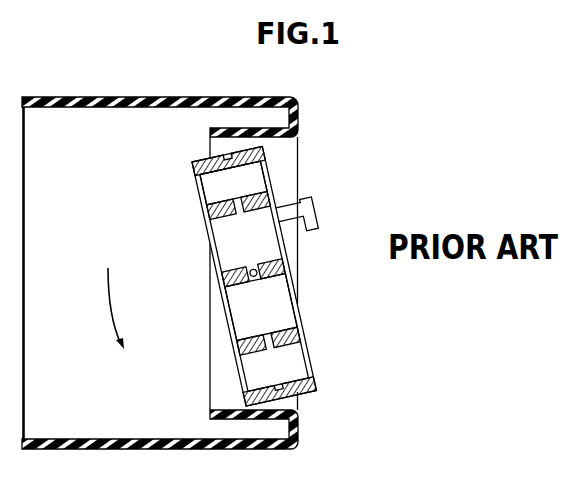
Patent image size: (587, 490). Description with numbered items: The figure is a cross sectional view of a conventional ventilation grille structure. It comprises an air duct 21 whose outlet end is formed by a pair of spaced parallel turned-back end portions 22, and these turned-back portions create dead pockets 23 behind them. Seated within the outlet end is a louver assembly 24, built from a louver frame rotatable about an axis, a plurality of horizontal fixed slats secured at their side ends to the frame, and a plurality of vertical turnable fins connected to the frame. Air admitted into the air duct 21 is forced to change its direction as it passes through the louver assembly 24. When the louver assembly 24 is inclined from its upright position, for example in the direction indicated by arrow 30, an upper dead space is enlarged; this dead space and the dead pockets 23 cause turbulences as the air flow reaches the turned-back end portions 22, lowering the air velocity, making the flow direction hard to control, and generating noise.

The air duct 21 is at (161, 94).
The turned-back end portions 22 is at (296, 141).
The dead pockets 23 is at (224, 117).
The louver assembly 24 is at (244, 272).
The arrow 30 is at (107, 299).